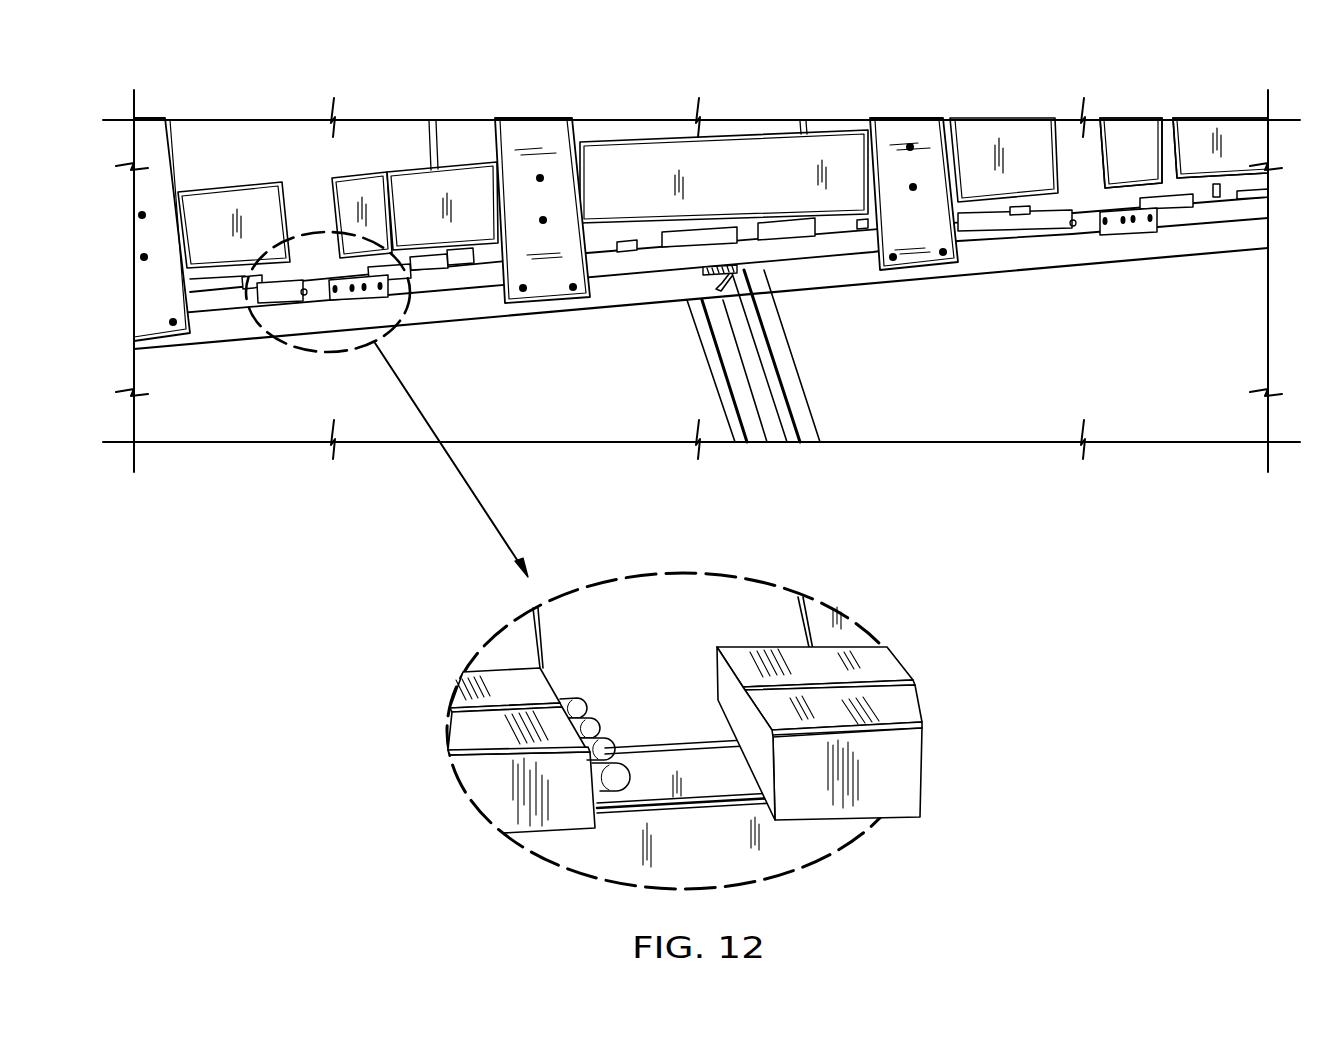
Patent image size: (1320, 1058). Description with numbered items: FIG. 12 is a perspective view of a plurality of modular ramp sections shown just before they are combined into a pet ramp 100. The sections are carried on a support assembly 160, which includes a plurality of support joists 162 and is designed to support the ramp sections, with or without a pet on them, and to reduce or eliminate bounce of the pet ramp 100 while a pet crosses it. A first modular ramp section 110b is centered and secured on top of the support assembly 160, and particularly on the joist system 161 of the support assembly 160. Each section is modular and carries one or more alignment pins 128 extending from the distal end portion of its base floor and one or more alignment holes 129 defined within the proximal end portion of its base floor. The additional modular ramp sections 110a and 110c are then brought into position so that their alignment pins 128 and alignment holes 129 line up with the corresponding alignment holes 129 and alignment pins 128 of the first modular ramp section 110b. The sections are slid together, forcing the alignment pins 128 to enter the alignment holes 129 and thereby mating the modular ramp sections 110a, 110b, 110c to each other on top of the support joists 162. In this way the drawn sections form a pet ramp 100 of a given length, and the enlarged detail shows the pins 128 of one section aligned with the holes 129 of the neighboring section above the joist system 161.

The pet ramp 100 is at (548, 106).
The modular ramp section 110a is at (163, 131).
The first modular ramp section 110b is at (556, 138).
The modular ramp section 110c is at (1190, 140).
The alignment pin 128 is at (304, 290).
The alignment hole 129 is at (1105, 225).
The support assembly 160 is at (790, 390).
The joist system 161 is at (688, 832).
The support joist 162 is at (1032, 258).